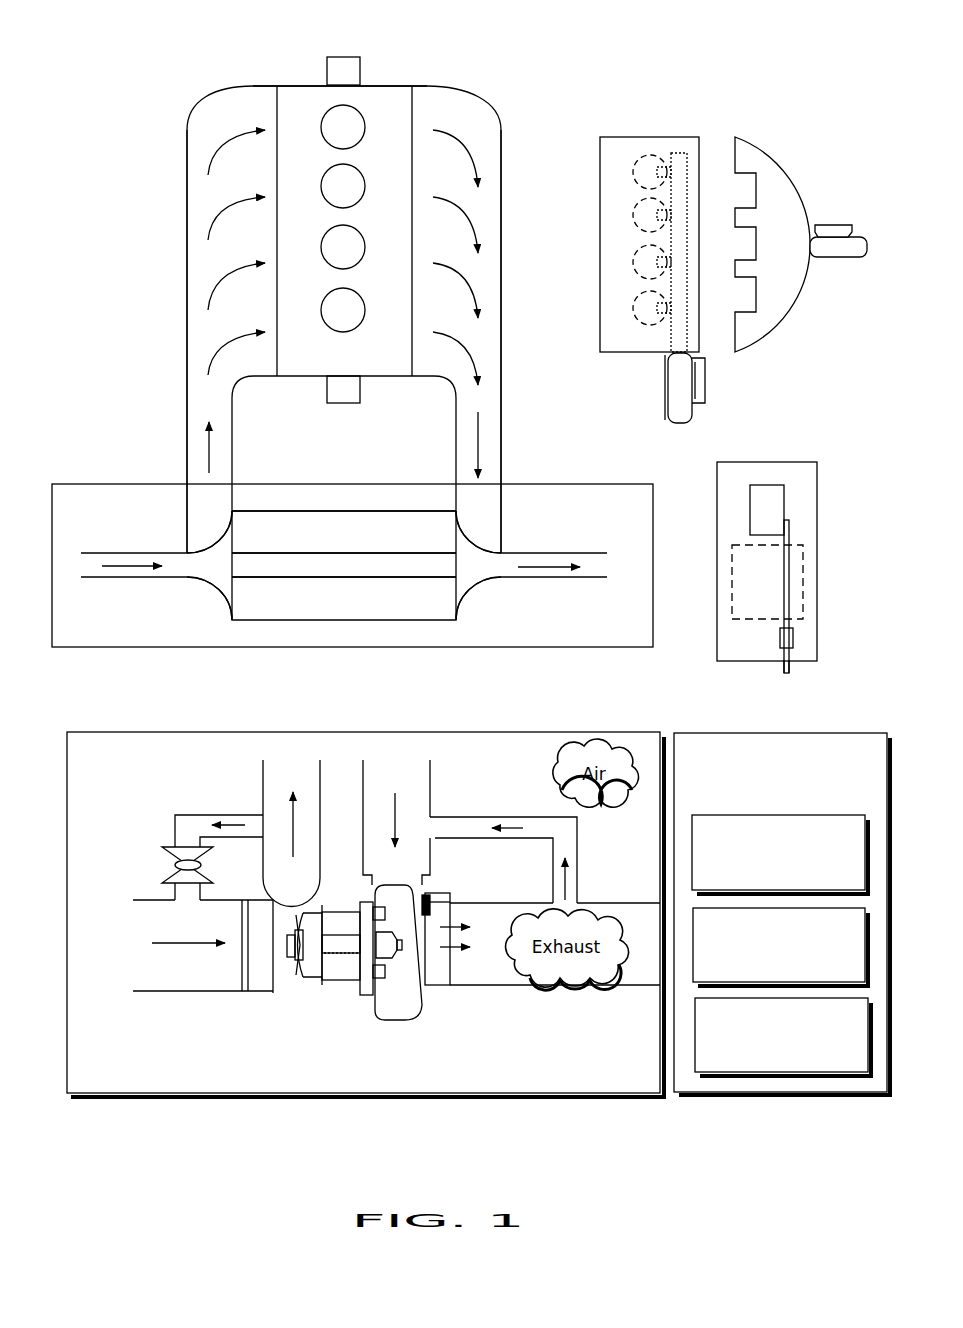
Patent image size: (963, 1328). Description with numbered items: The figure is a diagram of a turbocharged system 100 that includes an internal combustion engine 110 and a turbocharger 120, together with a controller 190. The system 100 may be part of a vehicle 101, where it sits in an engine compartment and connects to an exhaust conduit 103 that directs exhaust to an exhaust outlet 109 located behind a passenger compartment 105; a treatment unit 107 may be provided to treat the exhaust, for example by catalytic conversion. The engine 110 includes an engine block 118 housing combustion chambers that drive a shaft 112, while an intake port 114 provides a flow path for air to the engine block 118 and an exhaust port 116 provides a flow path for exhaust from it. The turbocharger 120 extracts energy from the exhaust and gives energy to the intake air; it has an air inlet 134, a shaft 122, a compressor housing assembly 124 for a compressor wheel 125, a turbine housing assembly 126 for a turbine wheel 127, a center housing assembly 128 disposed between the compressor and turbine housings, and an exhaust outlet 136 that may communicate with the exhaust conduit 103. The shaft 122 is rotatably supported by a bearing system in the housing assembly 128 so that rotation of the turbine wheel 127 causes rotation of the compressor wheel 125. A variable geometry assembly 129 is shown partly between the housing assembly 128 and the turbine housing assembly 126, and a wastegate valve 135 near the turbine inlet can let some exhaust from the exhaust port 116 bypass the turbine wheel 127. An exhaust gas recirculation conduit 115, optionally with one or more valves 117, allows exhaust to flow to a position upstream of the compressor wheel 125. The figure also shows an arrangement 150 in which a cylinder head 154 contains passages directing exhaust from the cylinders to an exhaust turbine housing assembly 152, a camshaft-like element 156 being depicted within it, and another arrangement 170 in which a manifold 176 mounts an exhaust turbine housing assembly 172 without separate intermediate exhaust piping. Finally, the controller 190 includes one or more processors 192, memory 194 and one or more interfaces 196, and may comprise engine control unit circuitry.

The turbocharged system 100 is at (488, 38).
The vehicle 101 is at (796, 446).
The exhaust conduit 103 is at (790, 535).
The passenger compartment 105 is at (803, 570).
The treatment unit 107 is at (793, 640).
The exhaust outlet 109 is at (789, 670).
The internal combustion engine 110 is at (310, 85).
The shaft 112 is at (345, 57).
The intake port 114 is at (207, 103).
The exhaust gas recirculation (EGR) conduit 115 is at (188, 815).
The exhaust port 116 is at (480, 100).
The valve 117 is at (170, 847).
The engine block 118 is at (343, 254).
The turbocharger 120 is at (555, 484).
The shaft 122 is at (343, 578).
The compressor housing assembly 124 is at (212, 592).
The compressor wheel 125 is at (310, 972).
The turbine housing assembly 126 is at (480, 584).
The turbine wheel 127 is at (392, 960).
The housing assembly 128 is at (378, 1075).
The variable geometry assembly 129 is at (366, 995).
The air inlet 134 is at (150, 553).
The wastegate valve 135 is at (430, 898).
The exhaust outlet 136 is at (555, 554).
The arrangement 150 is at (637, 260).
The exhaust turbine housing assembly 152 is at (666, 380).
The cylinder head 154 is at (600, 220).
The camshaft 156 is at (680, 153).
The arrangement 170 is at (815, 230).
The exhaust turbine housing assembly 172 is at (835, 258).
The manifold 176 is at (790, 310).
The controller 190 is at (782, 914).
The processor 192 is at (780, 854).
The memory 194 is at (780, 947).
The interface 196 is at (783, 1037).